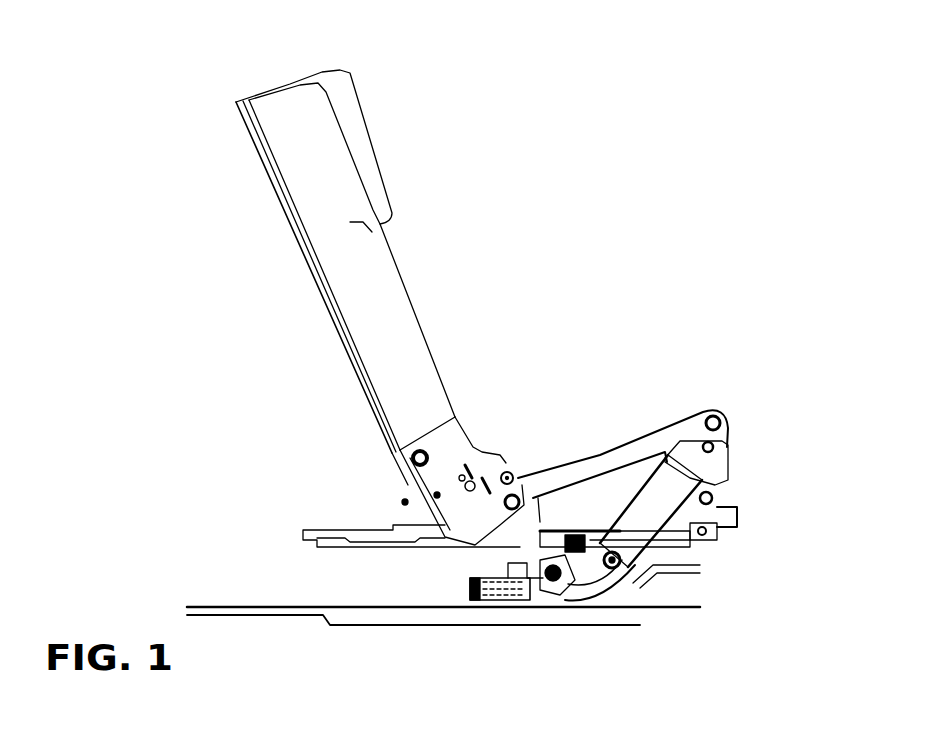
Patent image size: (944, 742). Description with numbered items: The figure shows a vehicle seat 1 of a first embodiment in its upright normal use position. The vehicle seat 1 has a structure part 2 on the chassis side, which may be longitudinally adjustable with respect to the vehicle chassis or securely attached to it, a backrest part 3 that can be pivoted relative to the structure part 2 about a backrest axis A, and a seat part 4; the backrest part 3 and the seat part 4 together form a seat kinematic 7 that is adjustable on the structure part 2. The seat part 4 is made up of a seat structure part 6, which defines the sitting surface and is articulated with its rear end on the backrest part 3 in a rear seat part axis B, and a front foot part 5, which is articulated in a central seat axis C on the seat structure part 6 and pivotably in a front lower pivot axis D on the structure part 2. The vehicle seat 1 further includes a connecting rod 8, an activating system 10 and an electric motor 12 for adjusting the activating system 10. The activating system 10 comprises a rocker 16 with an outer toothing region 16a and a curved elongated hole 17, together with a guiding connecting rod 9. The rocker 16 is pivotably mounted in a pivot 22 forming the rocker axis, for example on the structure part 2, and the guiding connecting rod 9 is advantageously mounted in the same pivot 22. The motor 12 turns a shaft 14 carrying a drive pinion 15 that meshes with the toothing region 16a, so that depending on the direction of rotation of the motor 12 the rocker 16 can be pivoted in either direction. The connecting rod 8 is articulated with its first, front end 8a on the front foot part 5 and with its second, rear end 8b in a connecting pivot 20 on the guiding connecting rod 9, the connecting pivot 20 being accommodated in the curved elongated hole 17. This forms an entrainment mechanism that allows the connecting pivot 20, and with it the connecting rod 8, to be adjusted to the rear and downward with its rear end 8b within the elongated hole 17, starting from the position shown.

The vehicle seat 1 is at (557, 128).
The structure part 2 is at (313, 535).
The backrest part 3 is at (395, 325).
The seat part 4 is at (658, 377).
The front foot part 5 is at (718, 458).
The seat structure part 6 is at (593, 463).
The seat kinematic 7 is at (722, 340).
The connecting rod 8 is at (665, 523).
The front end of connecting rod 8a is at (705, 497).
The rear end of connecting rod 8b is at (615, 562).
The guiding connecting rod 9 is at (600, 553).
The activating system 10 is at (568, 603).
The electric motor 12 is at (485, 600).
The shaft 14 is at (557, 575).
The drive pinion 15 is at (556, 580).
The rocker 16 is at (600, 600).
The outer toothing region 16a is at (550, 572).
The curved elongated hole 17 is at (612, 568).
The connecting pivot 20 is at (633, 563).
The pivot 22 is at (571, 565).
The backrest axis A is at (433, 462).
The rear seat part axis B is at (512, 474).
The central seat axis C is at (717, 423).
The front lower pivot axis D is at (717, 523).